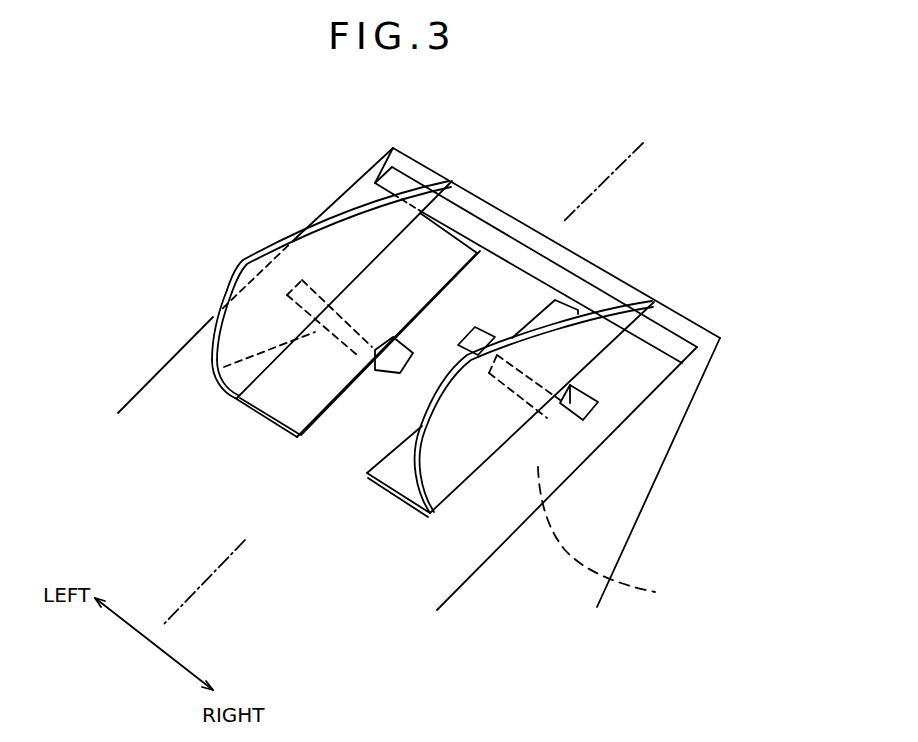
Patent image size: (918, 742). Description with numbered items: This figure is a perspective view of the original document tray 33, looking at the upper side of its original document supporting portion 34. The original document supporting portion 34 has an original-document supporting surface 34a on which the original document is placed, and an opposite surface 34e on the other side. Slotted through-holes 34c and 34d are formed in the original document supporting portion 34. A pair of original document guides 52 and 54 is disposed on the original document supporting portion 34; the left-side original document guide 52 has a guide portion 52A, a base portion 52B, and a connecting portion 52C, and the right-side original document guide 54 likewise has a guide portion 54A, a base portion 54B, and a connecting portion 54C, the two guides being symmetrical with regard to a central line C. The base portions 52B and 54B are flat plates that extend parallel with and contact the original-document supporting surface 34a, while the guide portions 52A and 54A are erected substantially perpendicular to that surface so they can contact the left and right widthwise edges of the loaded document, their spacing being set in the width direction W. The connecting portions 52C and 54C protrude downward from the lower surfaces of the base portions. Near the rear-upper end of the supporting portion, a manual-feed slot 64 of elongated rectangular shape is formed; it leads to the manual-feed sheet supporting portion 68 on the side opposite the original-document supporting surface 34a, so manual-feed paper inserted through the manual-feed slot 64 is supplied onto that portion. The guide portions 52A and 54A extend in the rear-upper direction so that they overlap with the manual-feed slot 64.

The original document tray 33 is at (690, 305).
The original document supporting portion 34 is at (647, 370).
The original-document supporting surface 34a is at (490, 283).
The slotted through-hole 34c is at (383, 377).
The slotted through-hole 34d is at (588, 404).
The opposite surface 34e is at (623, 537).
The manual-feed slot 64 is at (570, 228).
The manual-feed sheet supporting portion 68 is at (643, 510).
The left-side original document guide 52 is at (235, 255).
The guide portion 52A is at (311, 241).
The base portion 52B is at (267, 400).
The connecting portion 52C is at (213, 370).
The right-side original document guide 54 is at (425, 402).
The guide portion 54A is at (513, 335).
The base portion 54B is at (397, 480).
The connecting portion 54C is at (583, 419).
The central line C is at (413, 373).
The width direction W is at (154, 644).